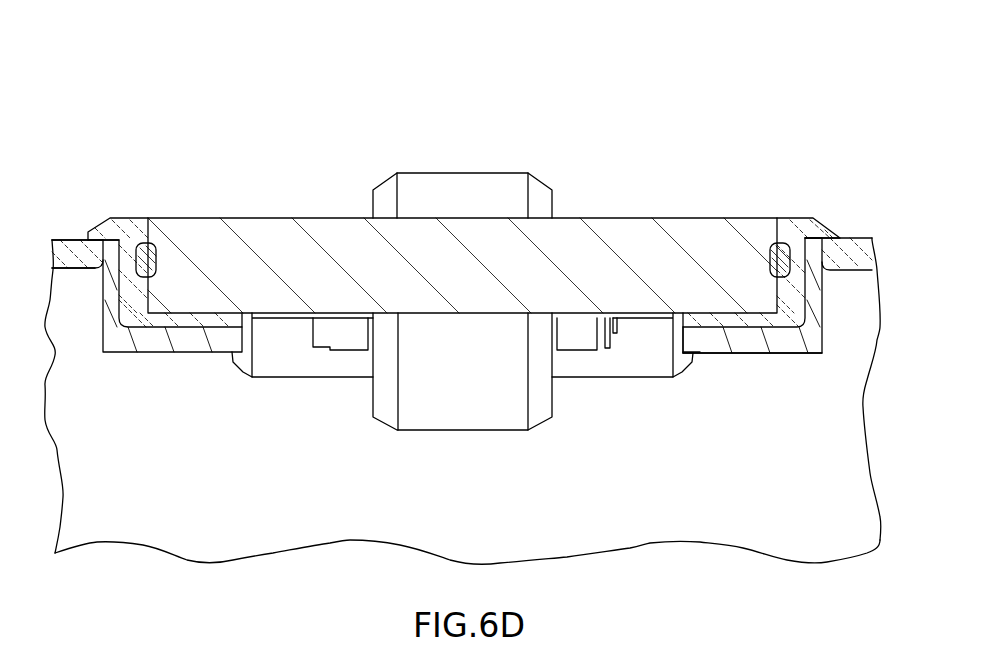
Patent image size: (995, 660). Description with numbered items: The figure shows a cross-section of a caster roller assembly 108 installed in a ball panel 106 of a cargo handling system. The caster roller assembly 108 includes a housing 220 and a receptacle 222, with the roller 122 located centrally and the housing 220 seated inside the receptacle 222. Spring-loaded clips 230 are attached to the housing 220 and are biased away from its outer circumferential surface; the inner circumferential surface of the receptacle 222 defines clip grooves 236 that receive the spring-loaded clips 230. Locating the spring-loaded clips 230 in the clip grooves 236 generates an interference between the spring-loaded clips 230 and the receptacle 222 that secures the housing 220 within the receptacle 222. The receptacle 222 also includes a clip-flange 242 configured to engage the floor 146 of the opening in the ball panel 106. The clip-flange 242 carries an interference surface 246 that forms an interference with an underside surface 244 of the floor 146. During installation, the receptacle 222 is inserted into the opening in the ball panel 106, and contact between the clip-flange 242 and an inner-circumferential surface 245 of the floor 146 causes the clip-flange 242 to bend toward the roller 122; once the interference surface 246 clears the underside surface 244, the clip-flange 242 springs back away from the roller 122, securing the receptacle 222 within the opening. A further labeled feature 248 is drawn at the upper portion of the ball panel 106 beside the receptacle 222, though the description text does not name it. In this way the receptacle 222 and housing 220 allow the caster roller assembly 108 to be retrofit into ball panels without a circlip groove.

The ball panel 106 is at (860, 245).
The caster roller assembly 108 is at (715, 101).
The roller 122 is at (448, 363).
The floor 146 is at (700, 337).
The housing 220 is at (442, 272).
The receptacle 222 is at (137, 220).
The spring-loaded clips 230 is at (147, 257).
The clip grooves 236 is at (133, 271).
The clip-flange 242 is at (245, 378).
The underside surface 244 is at (155, 353).
The inner-circumferential surface 245 is at (680, 345).
The interference surface 246 is at (683, 347).
The housing flange 248 is at (73, 240).